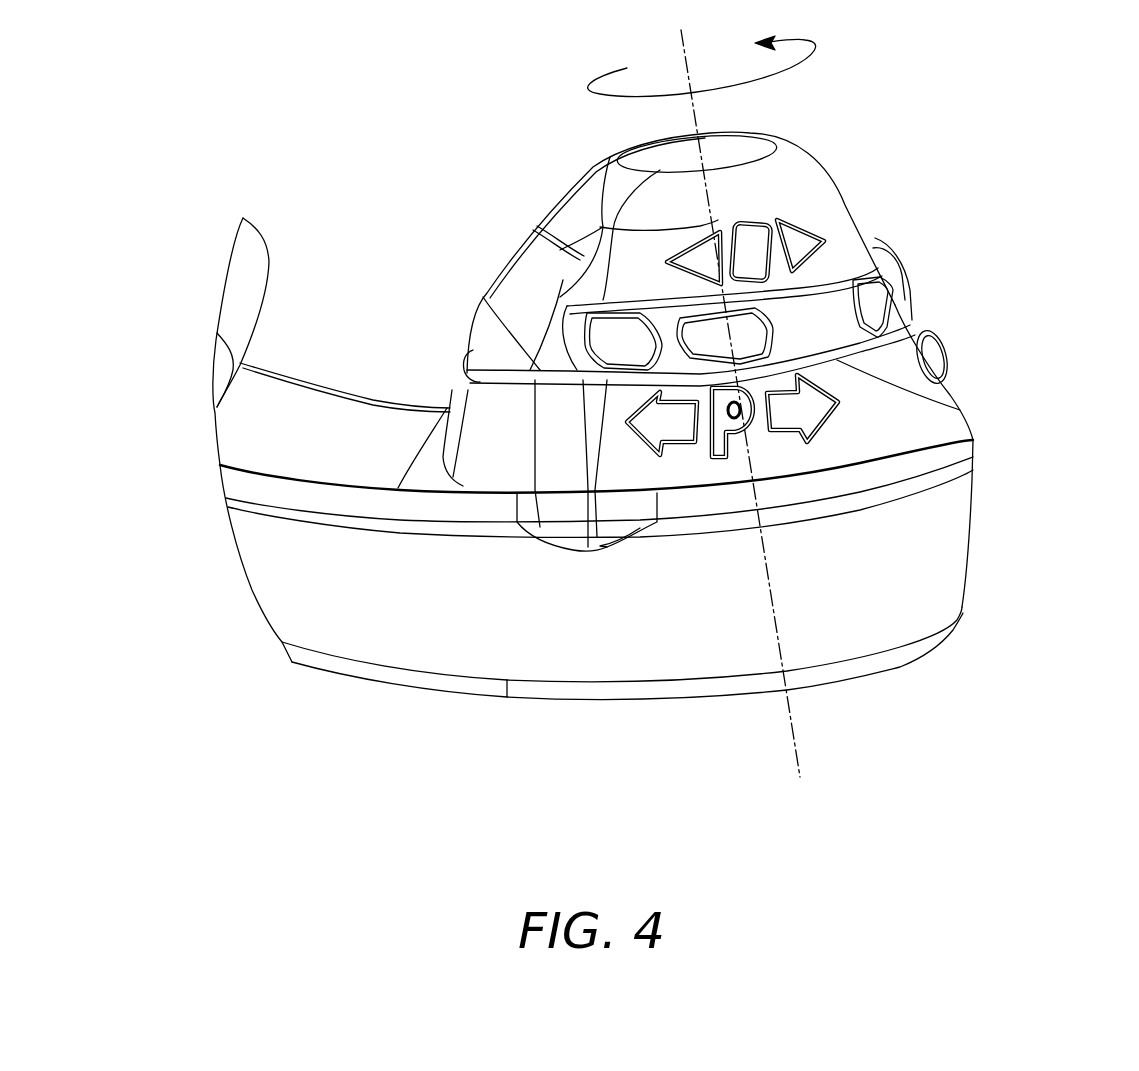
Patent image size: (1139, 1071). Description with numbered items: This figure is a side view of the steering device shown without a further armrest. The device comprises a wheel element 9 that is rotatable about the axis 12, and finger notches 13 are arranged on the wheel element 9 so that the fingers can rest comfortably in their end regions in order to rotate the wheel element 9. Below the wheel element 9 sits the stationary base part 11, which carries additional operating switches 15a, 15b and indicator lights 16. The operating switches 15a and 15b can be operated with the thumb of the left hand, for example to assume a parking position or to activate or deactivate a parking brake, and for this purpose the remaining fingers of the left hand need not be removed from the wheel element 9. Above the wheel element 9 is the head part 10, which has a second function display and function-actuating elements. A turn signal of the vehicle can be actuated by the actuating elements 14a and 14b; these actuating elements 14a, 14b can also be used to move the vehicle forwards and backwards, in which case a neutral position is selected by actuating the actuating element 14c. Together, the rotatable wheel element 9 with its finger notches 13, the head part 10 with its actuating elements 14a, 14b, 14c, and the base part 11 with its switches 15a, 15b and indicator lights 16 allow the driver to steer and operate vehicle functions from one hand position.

The wheel element 9 is at (843, 320).
The head part 10 is at (838, 208).
The stationary base part 11 is at (880, 433).
The axis 12 is at (700, 123).
The finger notches 13 is at (880, 263).
The actuating element 14a is at (688, 258).
The actuating element 14b is at (815, 236).
The actuating element 14c is at (747, 222).
The operating switch 15a is at (680, 420).
The operating switch 15b is at (805, 418).
The indicator lights 16 is at (933, 362).